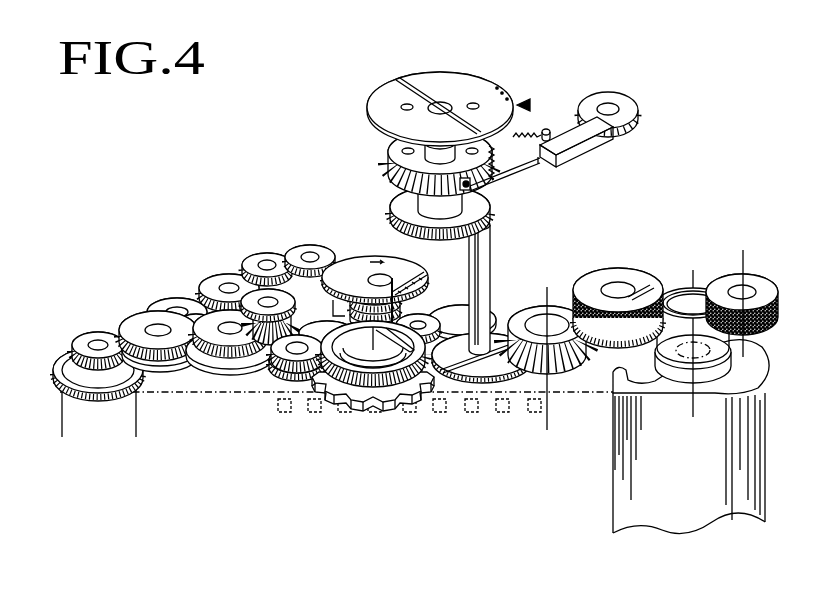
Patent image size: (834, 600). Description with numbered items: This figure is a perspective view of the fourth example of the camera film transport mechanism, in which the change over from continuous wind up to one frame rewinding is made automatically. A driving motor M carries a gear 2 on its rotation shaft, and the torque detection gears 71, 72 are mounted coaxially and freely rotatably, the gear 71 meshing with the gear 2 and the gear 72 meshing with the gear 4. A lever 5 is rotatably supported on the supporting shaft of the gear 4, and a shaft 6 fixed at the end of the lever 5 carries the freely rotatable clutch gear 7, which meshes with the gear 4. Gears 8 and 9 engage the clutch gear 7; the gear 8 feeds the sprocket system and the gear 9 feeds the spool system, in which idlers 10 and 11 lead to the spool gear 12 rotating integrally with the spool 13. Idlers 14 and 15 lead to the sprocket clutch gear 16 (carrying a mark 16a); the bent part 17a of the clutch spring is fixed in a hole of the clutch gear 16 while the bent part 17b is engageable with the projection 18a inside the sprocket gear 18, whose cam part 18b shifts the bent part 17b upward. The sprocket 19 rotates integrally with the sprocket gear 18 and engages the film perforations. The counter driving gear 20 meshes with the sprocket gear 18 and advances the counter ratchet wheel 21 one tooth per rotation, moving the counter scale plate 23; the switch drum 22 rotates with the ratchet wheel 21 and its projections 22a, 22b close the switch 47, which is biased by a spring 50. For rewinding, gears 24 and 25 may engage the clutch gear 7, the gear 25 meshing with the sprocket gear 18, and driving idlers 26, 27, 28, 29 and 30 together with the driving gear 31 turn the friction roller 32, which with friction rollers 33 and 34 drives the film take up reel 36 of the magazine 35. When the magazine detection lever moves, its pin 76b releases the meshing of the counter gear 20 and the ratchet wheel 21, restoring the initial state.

The gear 2 is at (83, 335).
The gear 4 is at (210, 350).
The lever 5 is at (227, 368).
The shaft 6 is at (263, 310).
The clutch gear 7 is at (284, 300).
The gear 8 is at (222, 278).
The gear 9 is at (197, 320).
The idler 10 is at (172, 300).
The idler 11 is at (146, 307).
The spool gear 12 is at (80, 373).
The spool 13 is at (88, 417).
The idler 14 is at (260, 263).
The idler 15 is at (298, 250).
The sprocket clutch gear 16 is at (375, 247).
The cam mark 16a is at (385, 272).
The bent part 17a is at (402, 280).
The bent part 17b is at (350, 287).
The sprocket gear 18 is at (372, 390).
The projection 18a is at (372, 352).
The cam part 18b is at (412, 345).
The sprocket 19 is at (417, 387).
The counter driving gear 20 is at (472, 372).
The counter ratchet wheel 21 is at (402, 207).
The switch drum 22 is at (390, 157).
The projection 22a is at (486, 186).
The projection 22b is at (520, 162).
The counter scale plate 23 is at (393, 88).
The gear 24 is at (280, 383).
The gear 25 is at (300, 375).
The driving idler 26 is at (327, 330).
The driving idler 27 is at (423, 315).
The driving idler 28 is at (432, 326).
The driving idler 29 is at (497, 316).
The driving idler 30 is at (537, 307).
The driving gear 31 is at (612, 332).
The friction roller 32 is at (618, 327).
The friction roller 33 is at (683, 377).
The friction roller 34 is at (763, 282).
The magazine 35 is at (753, 462).
The film take up reel 36 is at (680, 290).
The switch 47 is at (585, 140).
The spring 50 is at (535, 134).
The torque detection gear 71 is at (158, 365).
The torque detection gear 72 is at (140, 320).
The pin 76b is at (547, 129).
The driving motor M is at (63, 377).